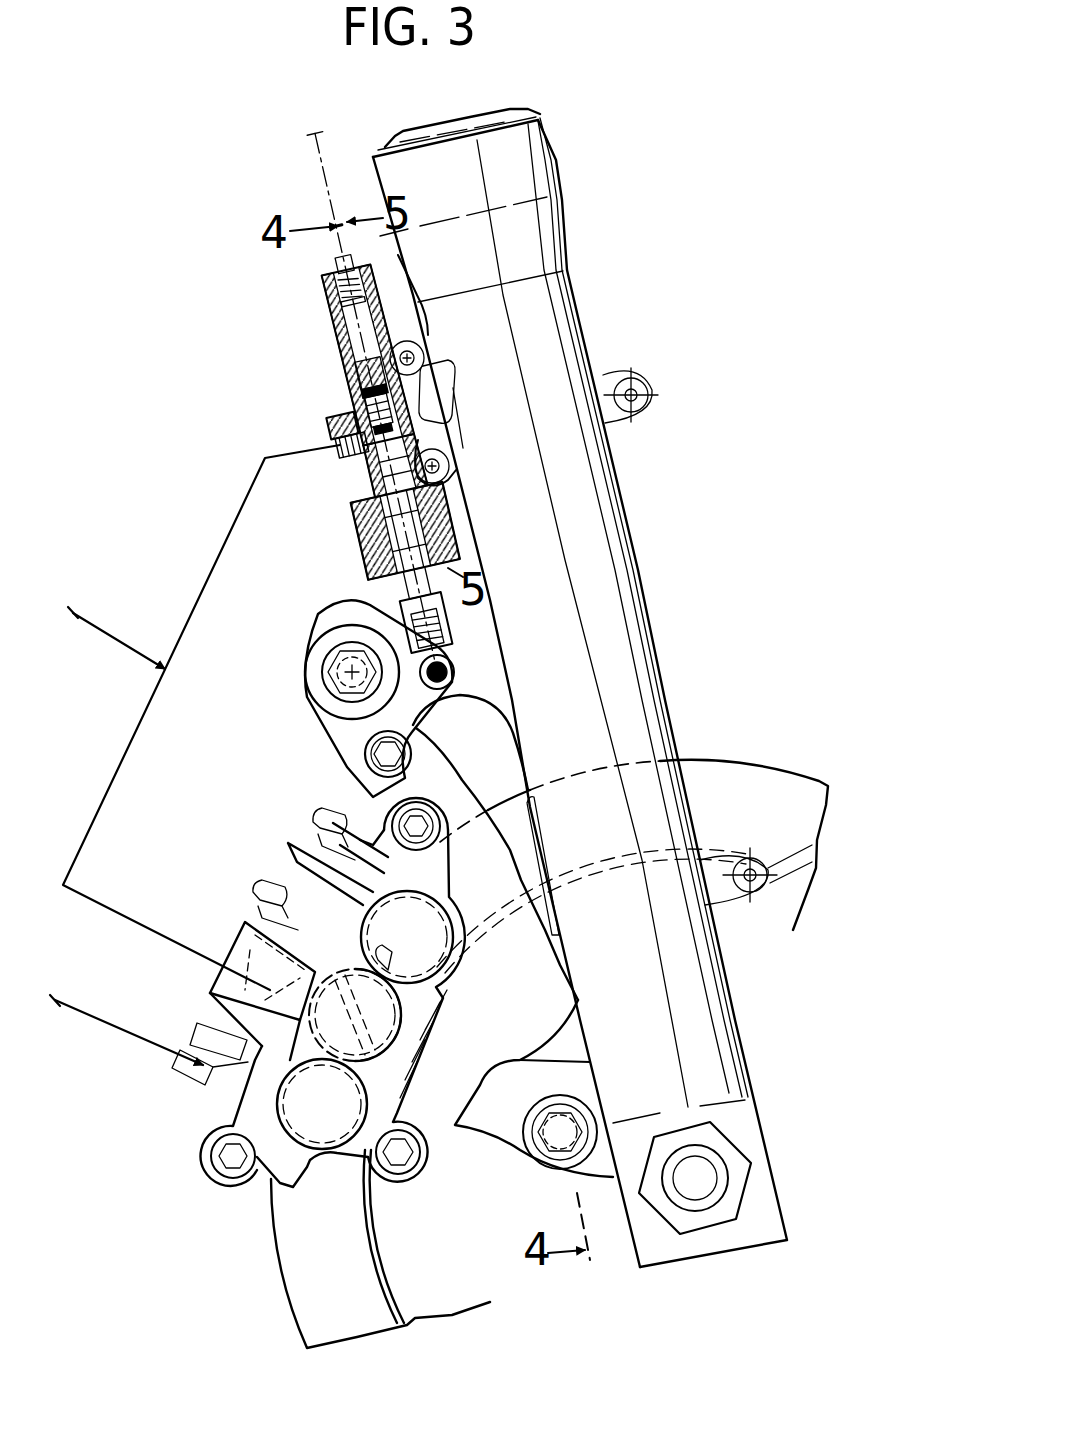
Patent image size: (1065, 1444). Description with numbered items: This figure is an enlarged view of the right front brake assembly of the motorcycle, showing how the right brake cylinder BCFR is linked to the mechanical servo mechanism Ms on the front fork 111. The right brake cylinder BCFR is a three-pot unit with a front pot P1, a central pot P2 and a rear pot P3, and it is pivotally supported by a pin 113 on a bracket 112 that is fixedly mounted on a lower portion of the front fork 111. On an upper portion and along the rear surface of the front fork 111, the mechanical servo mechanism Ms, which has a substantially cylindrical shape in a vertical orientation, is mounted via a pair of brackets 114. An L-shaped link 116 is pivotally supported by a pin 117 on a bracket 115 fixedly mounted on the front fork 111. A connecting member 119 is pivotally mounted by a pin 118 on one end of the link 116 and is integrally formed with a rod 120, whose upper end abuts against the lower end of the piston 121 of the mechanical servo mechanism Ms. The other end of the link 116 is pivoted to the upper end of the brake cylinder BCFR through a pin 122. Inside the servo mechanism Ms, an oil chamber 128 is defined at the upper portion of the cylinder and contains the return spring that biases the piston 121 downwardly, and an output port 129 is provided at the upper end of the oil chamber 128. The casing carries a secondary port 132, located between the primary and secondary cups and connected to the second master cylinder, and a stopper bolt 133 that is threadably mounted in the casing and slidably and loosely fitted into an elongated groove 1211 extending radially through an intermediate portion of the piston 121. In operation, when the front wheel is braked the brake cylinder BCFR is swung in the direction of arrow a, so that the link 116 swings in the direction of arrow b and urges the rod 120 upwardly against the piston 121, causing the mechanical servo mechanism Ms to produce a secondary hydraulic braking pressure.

The front fork 111 is at (628, 604).
The bracket 112 is at (590, 1084).
The pin 113 is at (545, 1160).
The brackets 114 is at (449, 420).
The bracket 115 is at (426, 622).
The L-shaped link 116 is at (345, 726).
The pin 117 is at (332, 680).
The pin 118 is at (462, 674).
The connecting member 119 is at (427, 628).
The rod 120 is at (405, 531).
The piston 121 is at (395, 466).
The elongated groove 1211 is at (425, 468).
The pin 122 is at (372, 772).
The oil chamber 128 is at (376, 396).
The output port 129 is at (348, 280).
The secondary port 132 is at (342, 426).
The stopper bolt 133 is at (352, 445).
The mechanical servo mechanism Ms is at (341, 407).
The right brake cylinder BCFR is at (318, 1010).
The front pot P1 is at (425, 915).
The central pot P2 is at (372, 1042).
The rear pot P3 is at (325, 1130).
The arrow a is at (487, 1040).
The arrow b is at (456, 710).